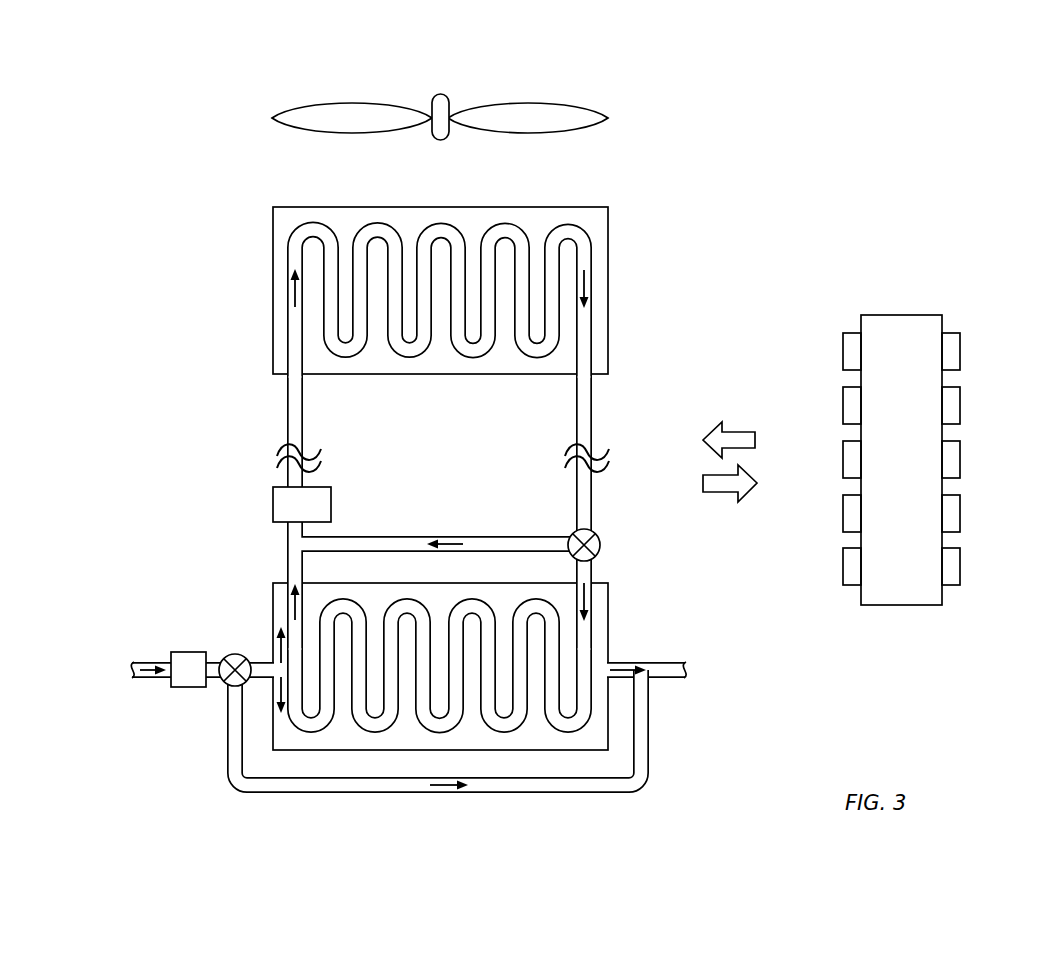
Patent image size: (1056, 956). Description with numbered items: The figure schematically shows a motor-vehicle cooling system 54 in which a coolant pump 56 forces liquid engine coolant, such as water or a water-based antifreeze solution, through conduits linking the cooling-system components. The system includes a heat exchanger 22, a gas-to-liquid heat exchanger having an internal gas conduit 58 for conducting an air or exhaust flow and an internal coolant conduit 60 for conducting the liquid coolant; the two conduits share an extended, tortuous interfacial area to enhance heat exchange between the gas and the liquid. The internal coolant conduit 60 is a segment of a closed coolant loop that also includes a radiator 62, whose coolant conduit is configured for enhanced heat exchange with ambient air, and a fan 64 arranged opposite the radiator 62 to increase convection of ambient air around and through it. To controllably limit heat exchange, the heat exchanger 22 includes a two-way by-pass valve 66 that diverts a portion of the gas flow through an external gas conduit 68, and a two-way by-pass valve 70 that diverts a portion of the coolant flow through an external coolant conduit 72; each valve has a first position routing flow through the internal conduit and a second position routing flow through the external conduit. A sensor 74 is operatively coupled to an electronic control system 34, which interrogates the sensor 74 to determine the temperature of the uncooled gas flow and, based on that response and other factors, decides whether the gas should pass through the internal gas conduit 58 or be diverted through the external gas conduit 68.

The heat exchanger 22 is at (93, 530).
The electronic control system 34 is at (913, 471).
The cooling system 54 is at (940, 121).
The coolant pump 56 is at (313, 517).
The internal gas conduit 58 is at (622, 660).
The internal coolant conduit 60 is at (407, 597).
The radiator 62 is at (95, 203).
The fan 64 is at (582, 103).
The two-way by-pass valve 66 is at (235, 653).
The external gas conduit 68 is at (445, 794).
The two-way by-pass valve 70 is at (599, 555).
The external coolant conduit 72 is at (446, 536).
The sensor 74 is at (199, 680).